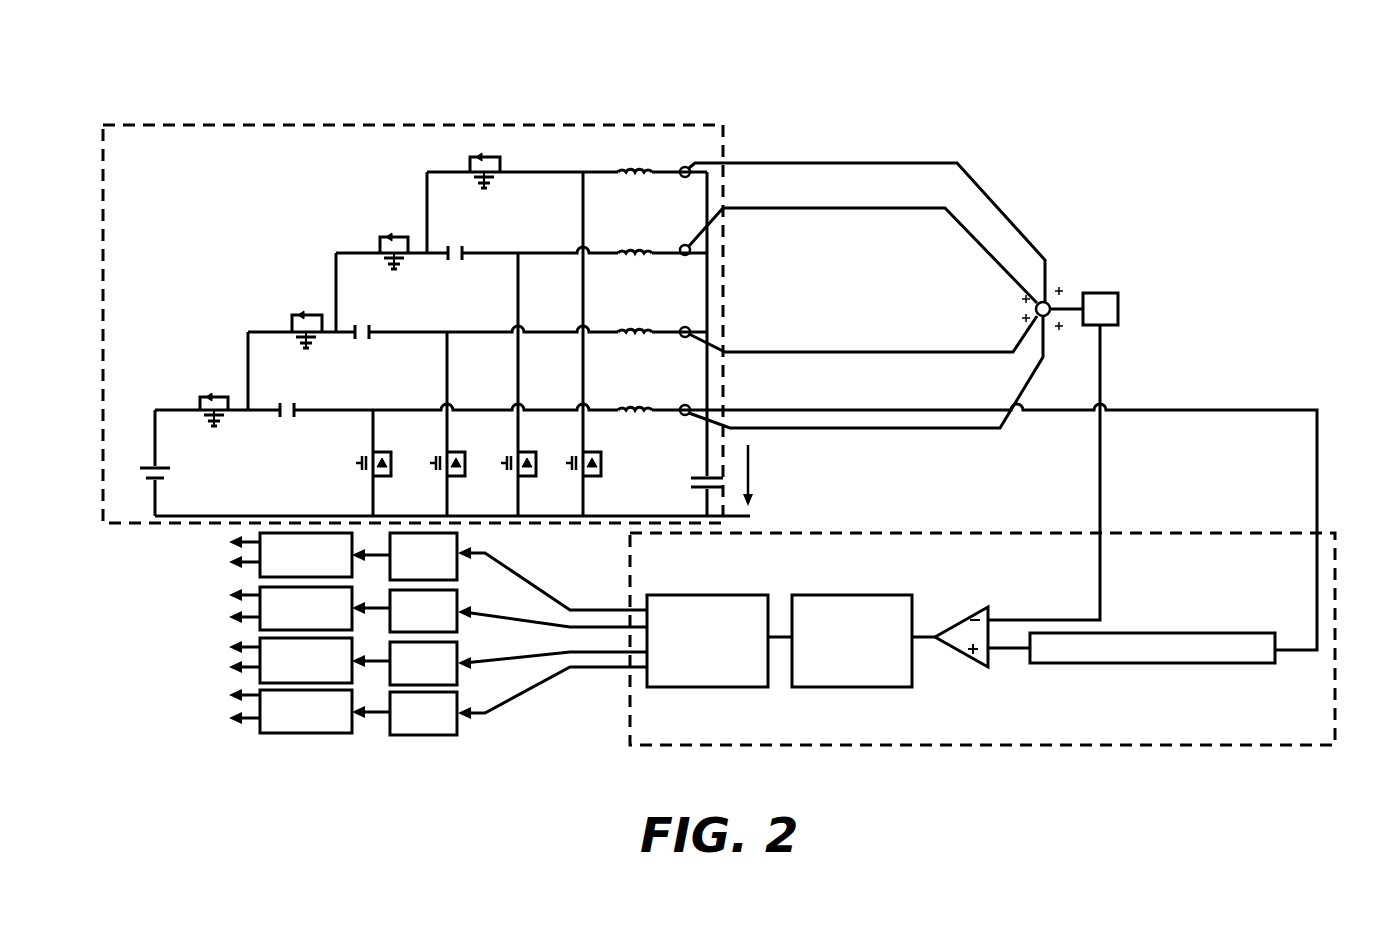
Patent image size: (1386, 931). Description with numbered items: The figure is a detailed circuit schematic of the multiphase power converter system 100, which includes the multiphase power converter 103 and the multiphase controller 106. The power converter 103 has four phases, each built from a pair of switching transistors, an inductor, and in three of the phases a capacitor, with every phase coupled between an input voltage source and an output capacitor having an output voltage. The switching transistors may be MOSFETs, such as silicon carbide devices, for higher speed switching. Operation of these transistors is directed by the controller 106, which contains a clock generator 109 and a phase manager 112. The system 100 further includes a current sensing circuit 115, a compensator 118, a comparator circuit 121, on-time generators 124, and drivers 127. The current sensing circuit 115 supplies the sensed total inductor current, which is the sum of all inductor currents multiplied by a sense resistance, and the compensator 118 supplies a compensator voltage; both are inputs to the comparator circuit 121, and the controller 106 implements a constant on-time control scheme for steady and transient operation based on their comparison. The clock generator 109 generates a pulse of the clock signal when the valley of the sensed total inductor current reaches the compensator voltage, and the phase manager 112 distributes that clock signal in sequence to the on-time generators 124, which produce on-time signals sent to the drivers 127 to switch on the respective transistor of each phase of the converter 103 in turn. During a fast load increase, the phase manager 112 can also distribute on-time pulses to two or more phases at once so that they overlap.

The multiphase power converter system 100 is at (1064, 86).
The multiphase power converter 103 is at (375, 125).
The multiphase controller 106 is at (835, 533).
The clock generator 109 is at (815, 595).
The phase manager 112 is at (683, 595).
The current sensing circuit 115 is at (1118, 293).
The compensator 118 is at (1200, 663).
The comparator circuit 121 is at (967, 657).
The on-time generators 124 is at (432, 762).
The drivers 127 is at (305, 762).